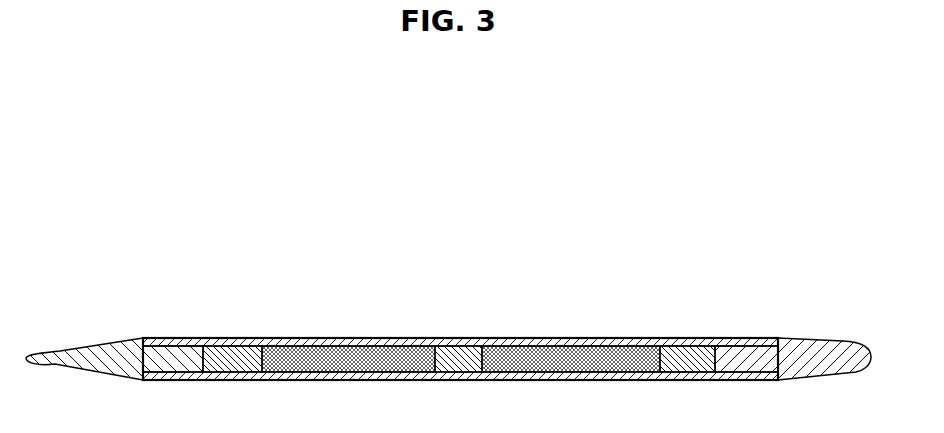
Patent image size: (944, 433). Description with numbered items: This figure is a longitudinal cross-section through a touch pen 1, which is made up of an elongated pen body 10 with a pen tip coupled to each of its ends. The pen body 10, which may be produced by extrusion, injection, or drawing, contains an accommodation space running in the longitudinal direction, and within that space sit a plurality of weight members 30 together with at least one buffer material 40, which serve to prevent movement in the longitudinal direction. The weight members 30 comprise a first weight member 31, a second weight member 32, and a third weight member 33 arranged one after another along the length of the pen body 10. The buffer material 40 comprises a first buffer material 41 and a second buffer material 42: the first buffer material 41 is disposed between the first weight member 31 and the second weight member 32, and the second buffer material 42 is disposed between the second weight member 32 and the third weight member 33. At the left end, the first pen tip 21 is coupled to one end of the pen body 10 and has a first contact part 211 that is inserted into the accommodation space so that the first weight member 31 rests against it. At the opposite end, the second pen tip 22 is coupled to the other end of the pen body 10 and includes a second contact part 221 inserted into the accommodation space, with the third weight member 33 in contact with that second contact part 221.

The touch pen 1 is at (155, 216).
The pen body 10 is at (527, 343).
The first pen tip 21 is at (106, 337).
The first contact part 211 is at (203, 355).
The second pen tip 22 is at (813, 337).
The second contact part 221 is at (718, 355).
The weight members 30 is at (459, 320).
The first weight member 31 is at (241, 350).
The second weight member 32 is at (462, 352).
The third weight member 33 is at (680, 350).
The buffer material 40 is at (461, 322).
The first buffer material 41 is at (365, 352).
The second buffer material 42 is at (591, 352).